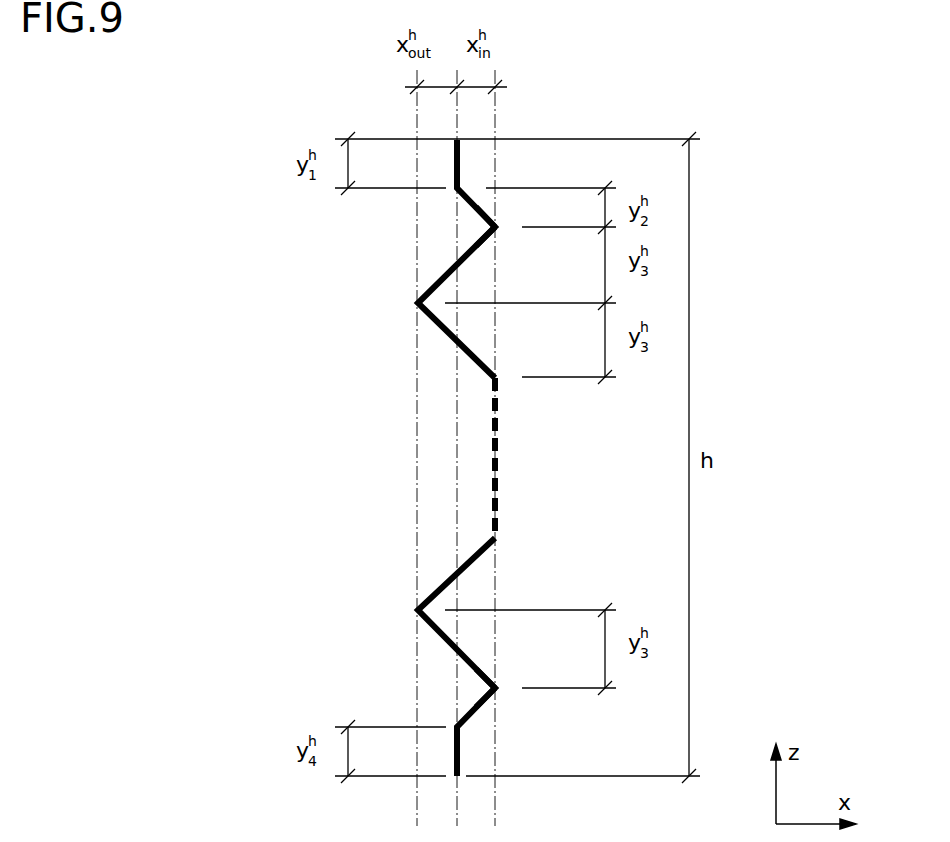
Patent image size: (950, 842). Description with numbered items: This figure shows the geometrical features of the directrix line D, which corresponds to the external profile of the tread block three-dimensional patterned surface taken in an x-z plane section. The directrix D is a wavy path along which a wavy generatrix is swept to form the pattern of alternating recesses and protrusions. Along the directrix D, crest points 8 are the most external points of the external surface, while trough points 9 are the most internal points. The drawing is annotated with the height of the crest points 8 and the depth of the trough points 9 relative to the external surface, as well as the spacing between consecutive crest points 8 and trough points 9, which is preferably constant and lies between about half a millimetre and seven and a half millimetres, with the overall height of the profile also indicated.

The crest points 8 is at (416, 304).
The trough points 9 is at (492, 222).
The directrix line D is at (258, 226).